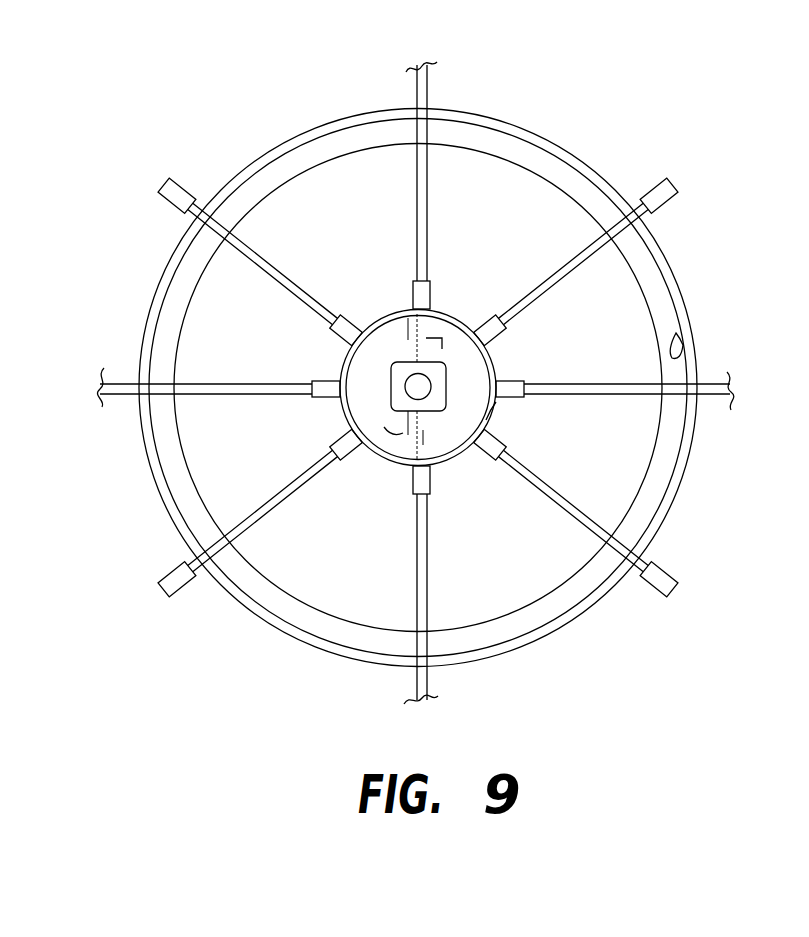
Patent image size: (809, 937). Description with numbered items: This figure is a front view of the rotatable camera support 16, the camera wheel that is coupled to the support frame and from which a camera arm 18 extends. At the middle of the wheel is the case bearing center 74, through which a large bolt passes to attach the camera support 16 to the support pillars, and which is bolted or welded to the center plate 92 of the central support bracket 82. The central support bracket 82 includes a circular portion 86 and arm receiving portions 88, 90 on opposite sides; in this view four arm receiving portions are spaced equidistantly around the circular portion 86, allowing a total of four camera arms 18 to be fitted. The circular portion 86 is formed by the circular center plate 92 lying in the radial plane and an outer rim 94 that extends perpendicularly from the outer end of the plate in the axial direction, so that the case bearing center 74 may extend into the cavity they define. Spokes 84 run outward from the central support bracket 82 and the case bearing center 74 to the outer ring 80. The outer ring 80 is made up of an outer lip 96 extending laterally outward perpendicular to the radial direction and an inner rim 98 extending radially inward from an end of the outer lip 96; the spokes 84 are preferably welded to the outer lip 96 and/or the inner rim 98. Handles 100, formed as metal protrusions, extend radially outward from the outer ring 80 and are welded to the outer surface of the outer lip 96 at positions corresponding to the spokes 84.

The camera support 16 is at (575, 146).
The camera arm 18 is at (428, 215).
The case bearing center 74 is at (402, 362).
The outer ring 80 is at (668, 262).
The central support bracket 82 is at (339, 412).
The spokes 84 is at (291, 285).
The circular portion 86 is at (437, 345).
The arm receiving portion 88 is at (505, 382).
The arm receiving portion 90 is at (325, 381).
The center plate 92 is at (398, 436).
The outer rim 94 is at (493, 412).
The outer lip 96 is at (682, 352).
The inner rim 98 is at (638, 287).
The handles 100 is at (167, 186).